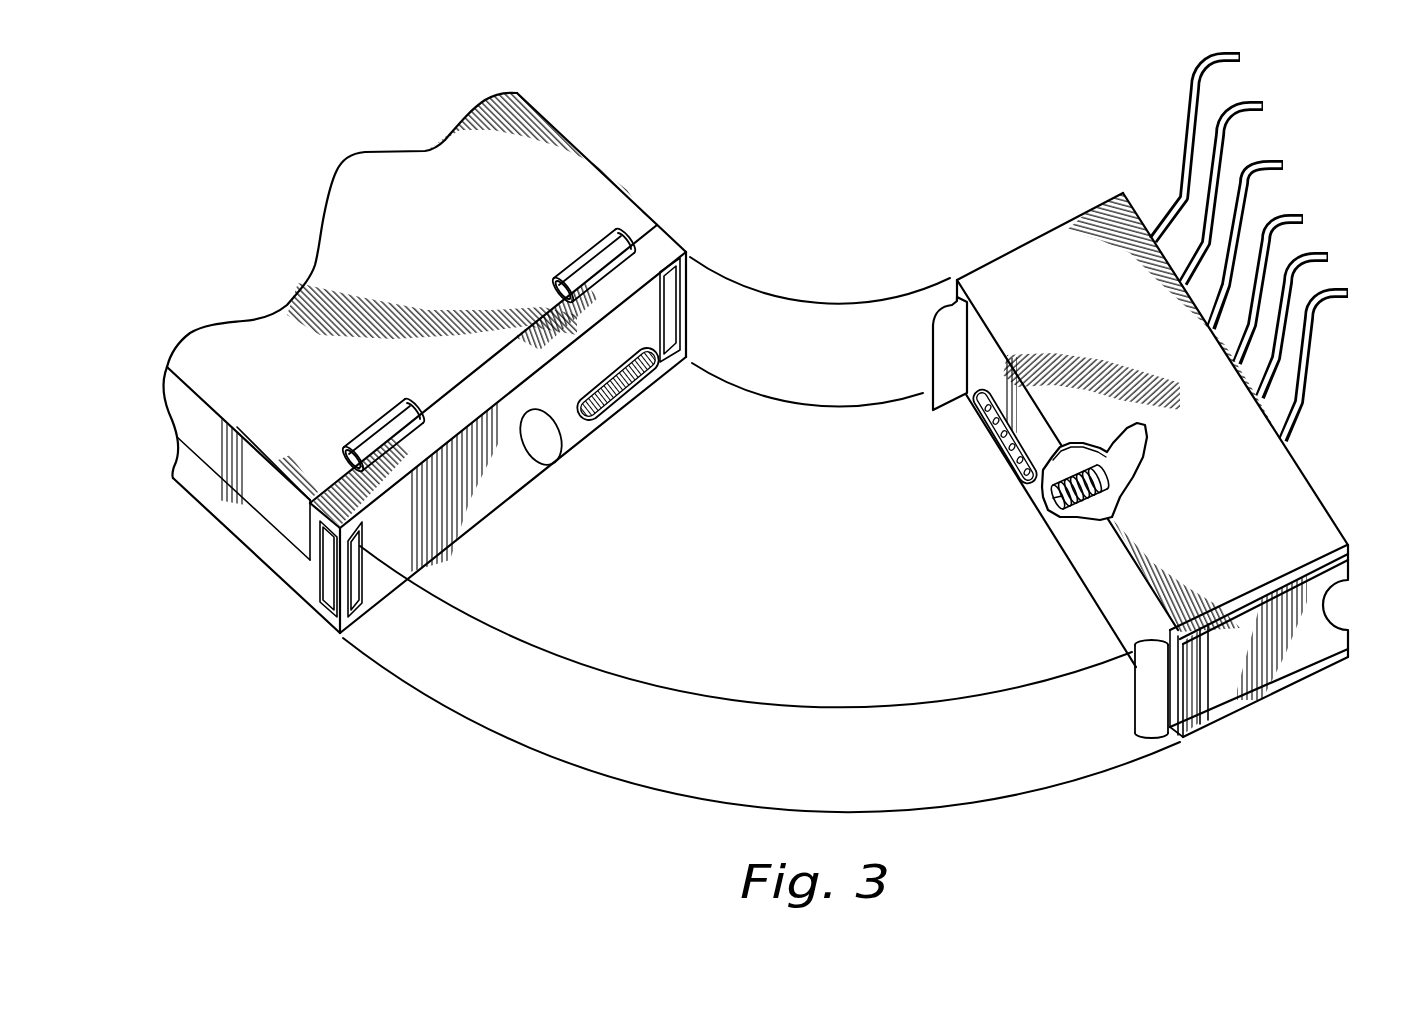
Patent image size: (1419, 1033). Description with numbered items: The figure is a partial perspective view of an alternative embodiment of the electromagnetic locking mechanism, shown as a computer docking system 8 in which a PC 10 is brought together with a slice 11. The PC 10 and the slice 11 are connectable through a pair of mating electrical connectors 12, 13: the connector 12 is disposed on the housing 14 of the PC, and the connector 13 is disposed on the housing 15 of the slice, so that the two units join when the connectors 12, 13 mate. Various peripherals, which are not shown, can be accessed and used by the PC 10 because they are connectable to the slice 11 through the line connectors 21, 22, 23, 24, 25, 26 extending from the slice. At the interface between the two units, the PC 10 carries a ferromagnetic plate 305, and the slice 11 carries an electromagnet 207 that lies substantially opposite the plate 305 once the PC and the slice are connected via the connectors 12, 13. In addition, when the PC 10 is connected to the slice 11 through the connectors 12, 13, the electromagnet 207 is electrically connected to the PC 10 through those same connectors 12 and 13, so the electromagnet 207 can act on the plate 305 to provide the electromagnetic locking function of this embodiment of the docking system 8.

The computer docking system 8 is at (390, 754).
The PC 10 is at (443, 362).
The slice 11 is at (1170, 397).
The electrical connector 12 is at (634, 390).
The electrical connector 13 is at (986, 430).
The housing 14 is at (472, 234).
The housing 15 is at (1312, 513).
The line connector 21 is at (1244, 66).
The line connector 22 is at (1266, 113).
The line connector 23 is at (1287, 171).
The line connector 24 is at (1307, 225).
The line connector 25 is at (1332, 264).
The line connector 26 is at (1352, 300).
The electromagnet 207 is at (1041, 513).
The ferromagnetic plate 305 is at (544, 444).